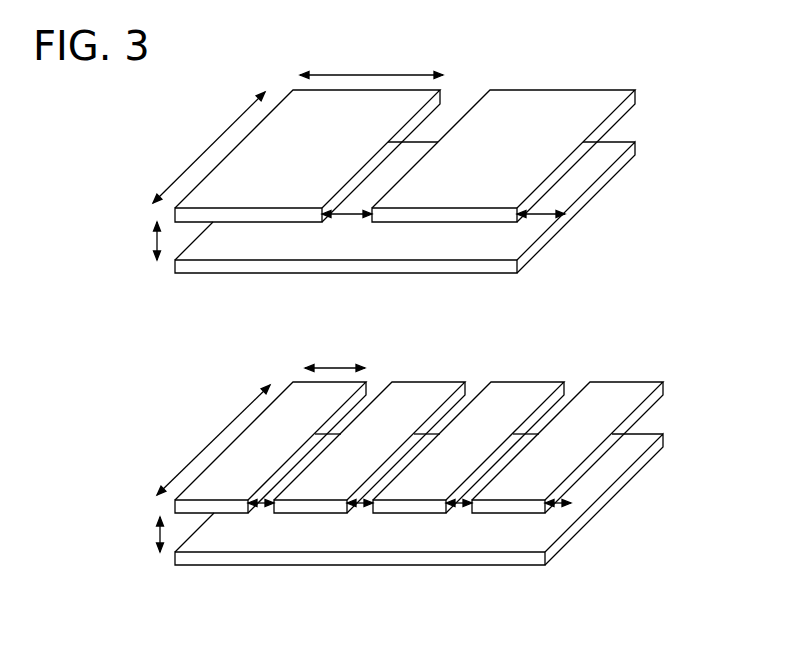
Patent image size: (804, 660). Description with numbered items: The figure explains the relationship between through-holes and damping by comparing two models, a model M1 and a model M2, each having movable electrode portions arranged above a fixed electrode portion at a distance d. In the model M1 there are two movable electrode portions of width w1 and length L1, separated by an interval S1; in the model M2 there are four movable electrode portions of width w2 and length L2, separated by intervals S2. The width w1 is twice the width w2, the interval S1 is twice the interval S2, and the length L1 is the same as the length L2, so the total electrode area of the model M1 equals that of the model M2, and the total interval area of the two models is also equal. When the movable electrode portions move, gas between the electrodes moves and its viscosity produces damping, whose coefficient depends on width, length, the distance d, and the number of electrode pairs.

The model M1 is at (643, 62).
The model M2 is at (644, 364).
The length of the movable electrode portion of model M1 L1 is at (209, 147).
The length of the movable electrode portion of model M2 L2 is at (213, 440).
The width of the movable electrode portion of model M1 w1 is at (371, 62).
The width of the movable electrode portion of model M2 w2 is at (335, 356).
The interval between movable electrode portions of model M1 S1 is at (443, 227).
The interval between movable electrode portions of model M2 S2 is at (410, 519).